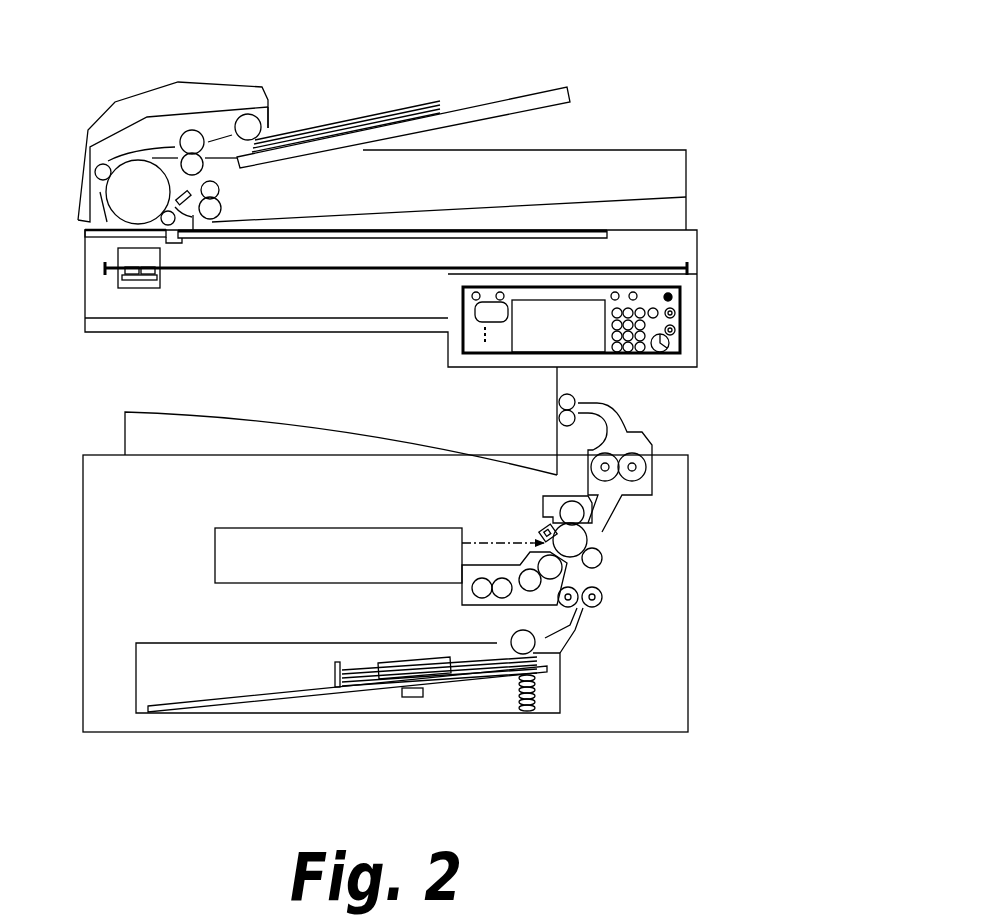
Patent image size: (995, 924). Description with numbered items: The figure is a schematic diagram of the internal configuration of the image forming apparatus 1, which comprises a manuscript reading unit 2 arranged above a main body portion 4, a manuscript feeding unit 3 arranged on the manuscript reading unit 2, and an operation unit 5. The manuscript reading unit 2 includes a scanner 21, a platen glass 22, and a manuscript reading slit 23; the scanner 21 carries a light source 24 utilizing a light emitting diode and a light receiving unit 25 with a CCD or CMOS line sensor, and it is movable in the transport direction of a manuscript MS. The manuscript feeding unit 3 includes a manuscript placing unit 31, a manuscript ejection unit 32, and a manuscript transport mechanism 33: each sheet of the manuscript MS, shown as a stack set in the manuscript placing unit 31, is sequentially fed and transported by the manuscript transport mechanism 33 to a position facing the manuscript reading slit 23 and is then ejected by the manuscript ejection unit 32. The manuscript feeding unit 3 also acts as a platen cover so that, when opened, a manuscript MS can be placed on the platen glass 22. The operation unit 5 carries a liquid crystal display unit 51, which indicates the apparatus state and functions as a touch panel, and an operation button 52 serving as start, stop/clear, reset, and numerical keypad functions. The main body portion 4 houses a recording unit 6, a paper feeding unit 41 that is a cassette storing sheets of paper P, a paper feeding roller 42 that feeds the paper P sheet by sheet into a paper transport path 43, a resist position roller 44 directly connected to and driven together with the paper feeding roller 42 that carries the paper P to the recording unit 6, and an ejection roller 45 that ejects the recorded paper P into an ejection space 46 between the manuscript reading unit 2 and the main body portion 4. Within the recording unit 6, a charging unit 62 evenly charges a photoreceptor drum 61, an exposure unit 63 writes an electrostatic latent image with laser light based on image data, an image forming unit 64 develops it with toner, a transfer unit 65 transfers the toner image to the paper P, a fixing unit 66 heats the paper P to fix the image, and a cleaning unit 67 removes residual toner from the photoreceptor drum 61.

The image forming apparatus 1 is at (632, 59).
The manuscript reading unit 2 is at (63, 274).
The manuscript feeding unit 3 is at (63, 167).
The main body portion 4 is at (63, 520).
The operation unit 5 is at (624, 306).
The recording unit 6 is at (463, 510).
The scanner 21 is at (157, 288).
The platen glass 22 is at (365, 234).
The manuscript reading slit 23 is at (85, 237).
The light source 24 is at (127, 268).
The light receiving unit 25 is at (152, 270).
The manuscript placing unit 31 is at (543, 90).
The manuscript ejection unit 32 is at (466, 205).
The manuscript transport mechanism 33 is at (207, 82).
The paper feeding unit 41 is at (560, 678).
The paper feeding roller 42 is at (518, 641).
The paper transport path 43 is at (585, 628).
The resist position roller 44 is at (605, 597).
The ejection roller 45 is at (560, 400).
The ejection space 46 is at (320, 420).
The liquid crystal display unit 51 is at (590, 312).
The operation button 52 is at (643, 322).
The photoreceptor drum 61 is at (578, 538).
The charging unit 62 is at (543, 528).
The exposure unit 63 is at (251, 567).
The image forming unit 64 is at (465, 596).
The transfer unit 65 is at (603, 558).
The fixing unit 66 is at (588, 458).
The cleaning unit 67 is at (547, 498).
The manuscript MS is at (363, 116).
The paper P is at (370, 668).